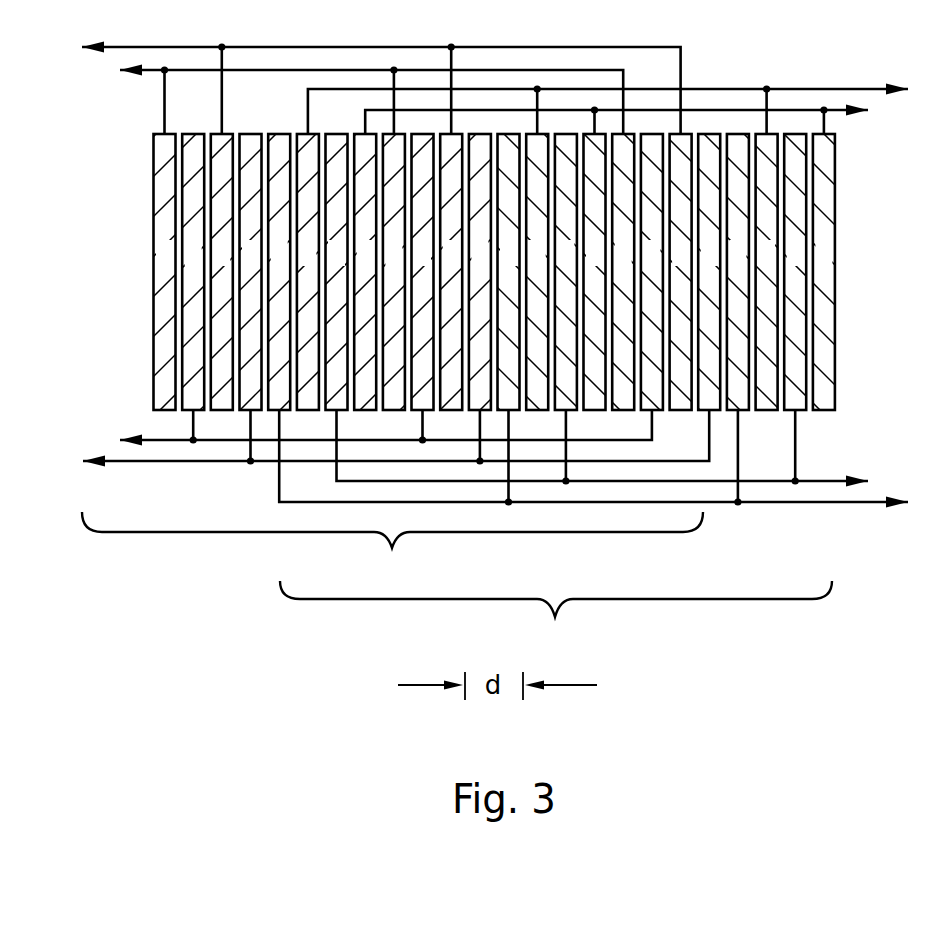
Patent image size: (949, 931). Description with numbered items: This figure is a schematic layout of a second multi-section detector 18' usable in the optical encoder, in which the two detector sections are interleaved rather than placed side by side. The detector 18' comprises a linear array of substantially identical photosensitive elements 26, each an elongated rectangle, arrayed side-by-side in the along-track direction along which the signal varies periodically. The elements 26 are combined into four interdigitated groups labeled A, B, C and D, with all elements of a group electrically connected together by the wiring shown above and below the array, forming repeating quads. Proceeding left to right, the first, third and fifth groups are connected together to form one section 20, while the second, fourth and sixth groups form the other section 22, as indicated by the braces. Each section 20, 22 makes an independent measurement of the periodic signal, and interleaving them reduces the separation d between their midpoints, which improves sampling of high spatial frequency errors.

The photosensitive elements 26 is at (220, 187).
The detector section 20 is at (392, 547).
The detector section 22 is at (556, 617).
The detector 18' is at (498, 359).